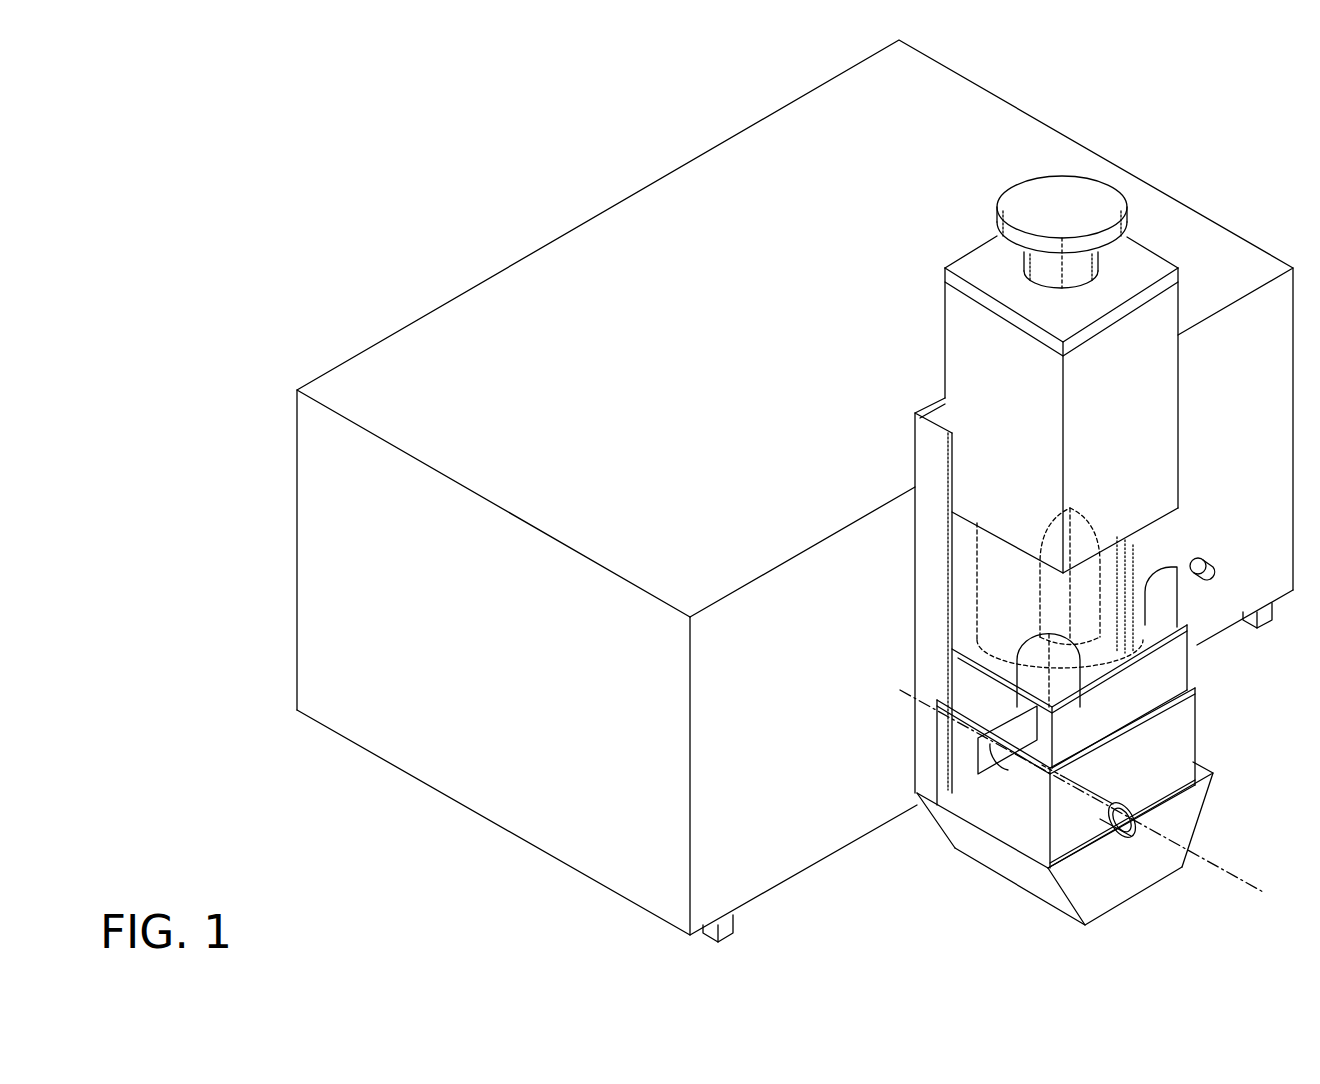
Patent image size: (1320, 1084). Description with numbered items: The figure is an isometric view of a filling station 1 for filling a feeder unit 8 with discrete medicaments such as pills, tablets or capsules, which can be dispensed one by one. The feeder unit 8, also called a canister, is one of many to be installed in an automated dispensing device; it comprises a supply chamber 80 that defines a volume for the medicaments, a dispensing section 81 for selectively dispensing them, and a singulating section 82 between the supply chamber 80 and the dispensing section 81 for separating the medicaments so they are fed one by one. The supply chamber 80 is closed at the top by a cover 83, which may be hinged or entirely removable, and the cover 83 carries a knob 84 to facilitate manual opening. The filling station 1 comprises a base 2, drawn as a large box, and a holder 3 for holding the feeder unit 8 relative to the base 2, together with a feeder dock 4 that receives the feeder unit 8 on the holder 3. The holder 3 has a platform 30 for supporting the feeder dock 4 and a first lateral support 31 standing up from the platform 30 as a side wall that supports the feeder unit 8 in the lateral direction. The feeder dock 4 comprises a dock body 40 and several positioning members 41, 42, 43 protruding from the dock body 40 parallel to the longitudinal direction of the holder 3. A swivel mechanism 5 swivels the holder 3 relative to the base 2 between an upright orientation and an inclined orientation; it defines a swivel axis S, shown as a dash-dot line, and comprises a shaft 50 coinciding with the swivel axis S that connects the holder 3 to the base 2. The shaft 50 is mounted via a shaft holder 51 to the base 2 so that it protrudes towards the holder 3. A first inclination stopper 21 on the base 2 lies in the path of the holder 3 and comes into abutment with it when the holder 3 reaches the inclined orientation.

The filling station 1 is at (322, 197).
The base 2 is at (312, 568).
The holder 3 is at (1065, 863).
The feeder dock 4 is at (1078, 716).
The swivel mechanism 5 is at (1044, 826).
The feeder unit 8 is at (1100, 380).
The first inclination stopper 21 is at (1212, 568).
The platform 30 is at (1040, 885).
The first lateral support 31 is at (922, 572).
The dock body 40 is at (1188, 733).
The positioning member 41 is at (1030, 668).
The positioning member 42 is at (1172, 603).
The positioning member 43 is at (1082, 520).
The shaft 50 is at (1115, 835).
The shaft holder 51 is at (975, 805).
The supply chamber 80 is at (1172, 372).
The dispensing section 81 is at (1180, 640).
The singulating section 82 is at (1140, 545).
The cover 83 is at (1150, 268).
The knob 84 is at (1080, 195).
The swivel axis S is at (1082, 799).